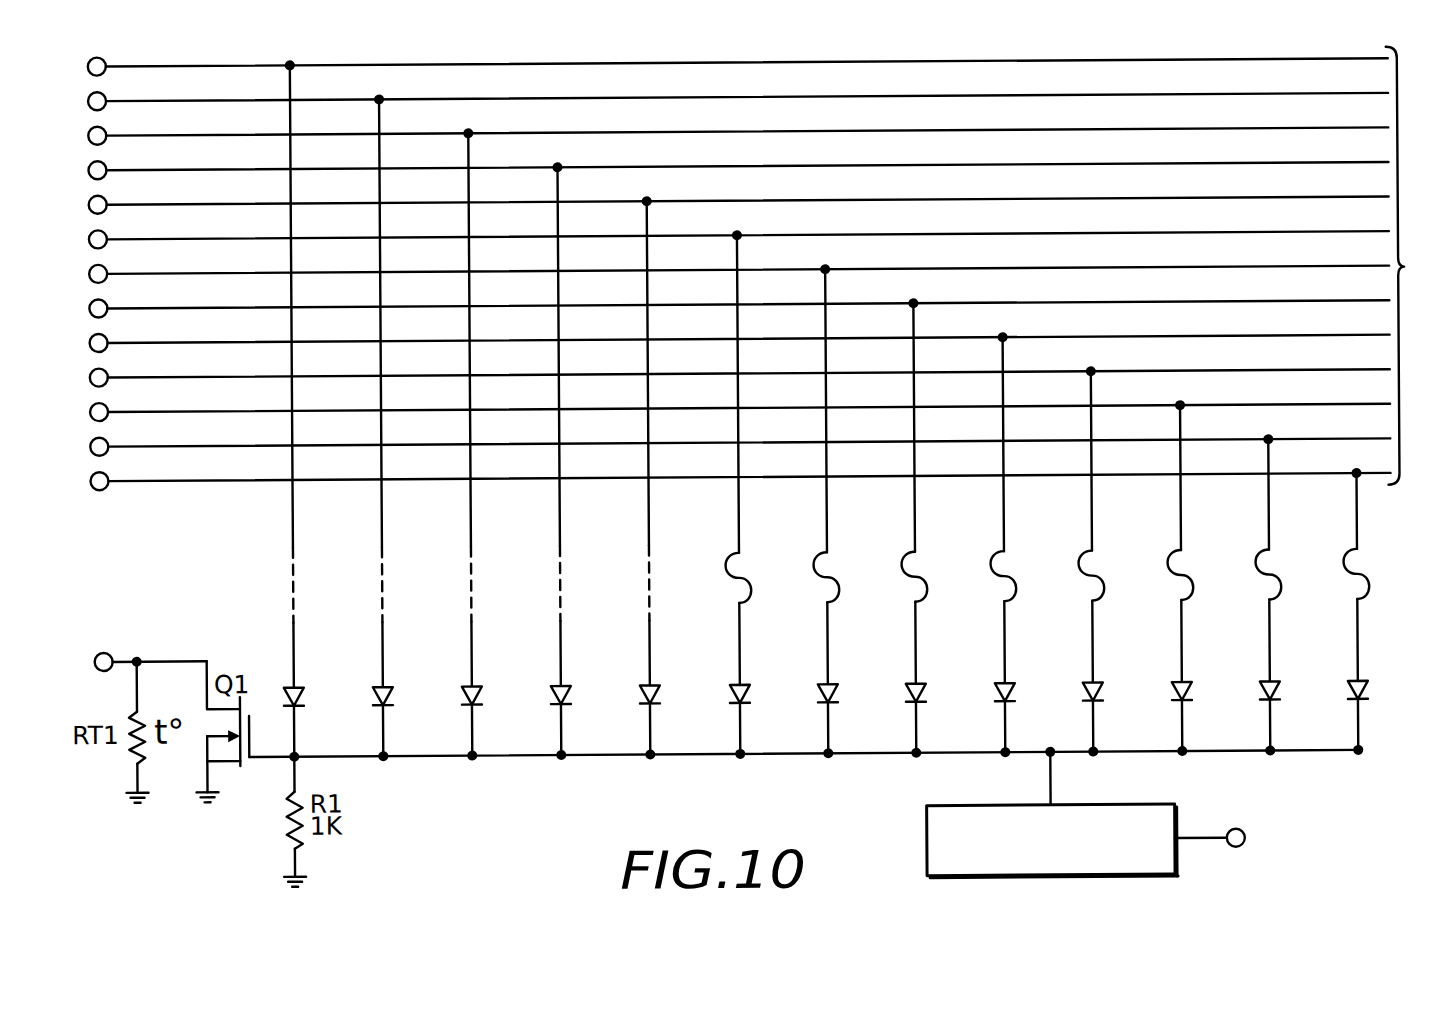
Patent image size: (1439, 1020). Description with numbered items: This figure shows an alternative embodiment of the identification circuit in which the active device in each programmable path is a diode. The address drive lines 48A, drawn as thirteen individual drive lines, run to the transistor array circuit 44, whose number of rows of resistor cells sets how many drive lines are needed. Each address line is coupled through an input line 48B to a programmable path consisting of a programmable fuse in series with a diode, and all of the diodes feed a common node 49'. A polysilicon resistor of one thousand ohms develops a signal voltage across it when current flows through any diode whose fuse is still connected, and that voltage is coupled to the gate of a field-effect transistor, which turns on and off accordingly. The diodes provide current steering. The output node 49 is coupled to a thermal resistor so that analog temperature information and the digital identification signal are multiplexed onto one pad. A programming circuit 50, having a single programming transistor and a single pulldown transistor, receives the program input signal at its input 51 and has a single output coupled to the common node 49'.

The array circuit 44 is at (1412, 265).
The address drive lines 48A is at (233, 498).
The input lines 48B is at (276, 599).
The output node 49 is at (120, 634).
The common node 49' is at (806, 782).
The programming circuit 50 is at (1003, 805).
The input 51 is at (1198, 840).